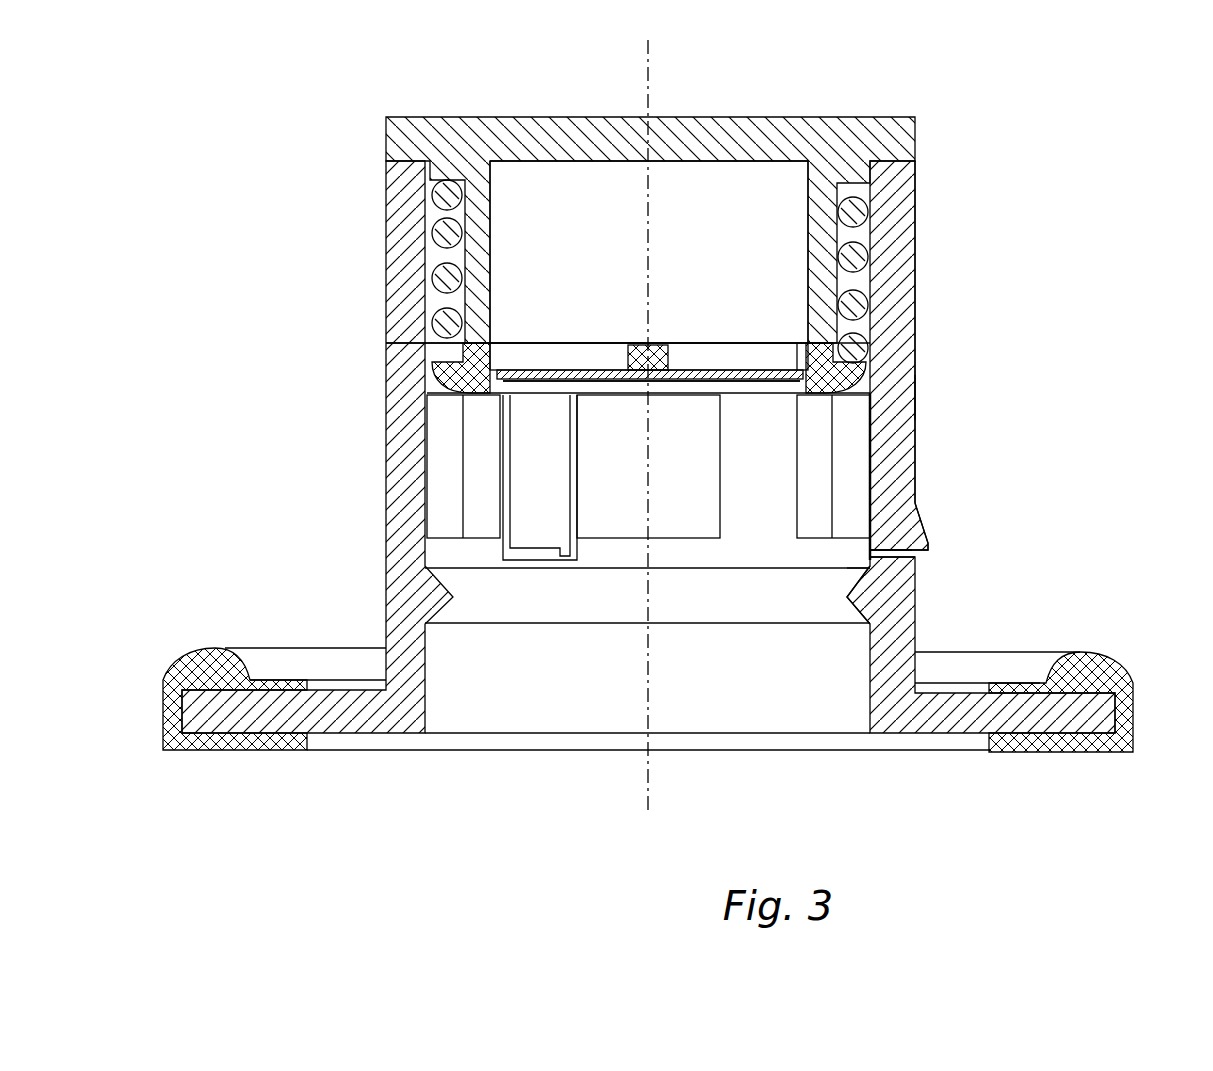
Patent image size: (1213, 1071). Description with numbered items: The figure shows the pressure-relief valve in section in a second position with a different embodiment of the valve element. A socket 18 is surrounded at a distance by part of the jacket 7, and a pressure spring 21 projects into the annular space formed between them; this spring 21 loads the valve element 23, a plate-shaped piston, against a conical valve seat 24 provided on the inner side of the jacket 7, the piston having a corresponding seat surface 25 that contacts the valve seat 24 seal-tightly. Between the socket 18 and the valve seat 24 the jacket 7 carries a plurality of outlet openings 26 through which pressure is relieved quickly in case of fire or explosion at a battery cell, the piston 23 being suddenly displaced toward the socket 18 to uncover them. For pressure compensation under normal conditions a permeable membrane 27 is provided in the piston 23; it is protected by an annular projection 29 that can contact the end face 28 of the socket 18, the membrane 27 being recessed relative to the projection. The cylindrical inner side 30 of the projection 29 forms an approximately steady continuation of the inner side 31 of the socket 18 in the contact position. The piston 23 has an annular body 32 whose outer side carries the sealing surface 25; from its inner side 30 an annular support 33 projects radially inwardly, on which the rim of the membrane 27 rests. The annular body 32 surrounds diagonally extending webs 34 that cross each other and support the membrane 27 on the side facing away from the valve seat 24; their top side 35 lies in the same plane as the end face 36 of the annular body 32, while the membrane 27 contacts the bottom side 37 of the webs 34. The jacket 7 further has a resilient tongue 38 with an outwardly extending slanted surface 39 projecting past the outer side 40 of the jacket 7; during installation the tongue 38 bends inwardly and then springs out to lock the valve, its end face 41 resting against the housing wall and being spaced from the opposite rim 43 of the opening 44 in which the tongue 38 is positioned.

The jacket 7 is at (893, 345).
The socket 18 is at (445, 267).
The pressure spring 21 is at (445, 190).
The valve element 23 is at (757, 388).
The valve seat 24 is at (852, 584).
The seat surface 25 is at (443, 363).
The outlet opening 26 is at (843, 462).
The permeable membrane 27 is at (723, 343).
The end face of the socket 28 is at (812, 342).
The annular projection 29 is at (492, 340).
The cylindrical inner side 30 is at (492, 360).
The inner side of the socket 31 is at (493, 215).
The annular body 32 is at (915, 400).
The annular support 33 is at (488, 363).
The diagonally extending web 34 is at (655, 345).
The top side of the webs 35 is at (632, 343).
The end face of the annular body 36 is at (455, 345).
The bottom side of the webs 37 is at (703, 372).
The resilient tongue 38 is at (915, 387).
The slanted surface 39 is at (922, 520).
The outer side of the jacket 40 is at (915, 297).
The end face of the spring tongue 41 is at (912, 549).
The rim of the opening 43 is at (867, 550).
The opening 44 is at (912, 563).